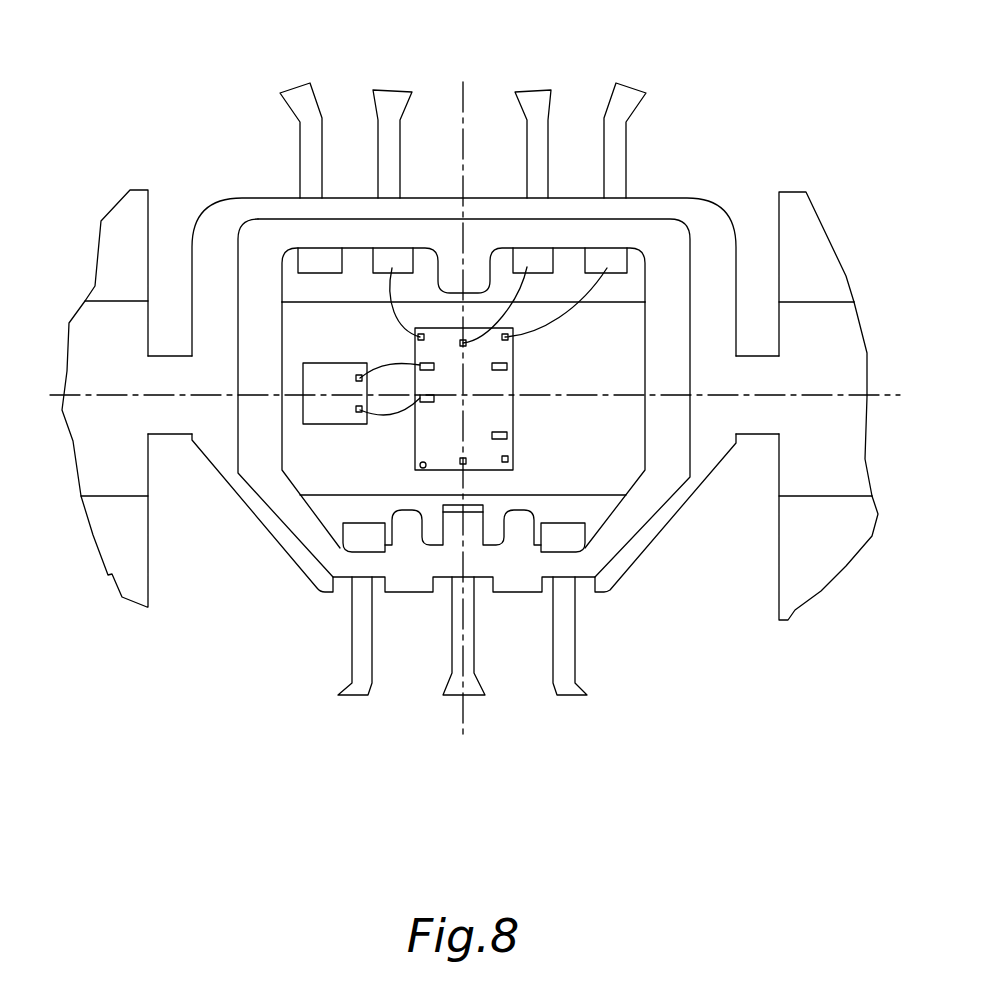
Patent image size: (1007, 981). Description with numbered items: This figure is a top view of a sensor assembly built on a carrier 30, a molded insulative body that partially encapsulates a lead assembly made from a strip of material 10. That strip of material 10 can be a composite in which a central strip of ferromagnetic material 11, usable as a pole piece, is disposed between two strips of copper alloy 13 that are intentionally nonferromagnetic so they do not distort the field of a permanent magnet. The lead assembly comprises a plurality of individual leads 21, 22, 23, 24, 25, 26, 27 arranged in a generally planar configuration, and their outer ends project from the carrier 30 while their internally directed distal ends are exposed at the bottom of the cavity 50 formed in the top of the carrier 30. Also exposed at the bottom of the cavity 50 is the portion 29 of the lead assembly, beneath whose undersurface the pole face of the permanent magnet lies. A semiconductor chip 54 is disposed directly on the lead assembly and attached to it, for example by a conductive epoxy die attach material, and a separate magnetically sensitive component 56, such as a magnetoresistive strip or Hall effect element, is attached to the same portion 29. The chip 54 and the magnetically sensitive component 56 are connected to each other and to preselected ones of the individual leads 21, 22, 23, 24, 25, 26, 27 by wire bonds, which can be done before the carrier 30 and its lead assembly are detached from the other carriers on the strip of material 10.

The strip of material 10 is at (130, 219).
The central strip of ferromagnetic material 11 is at (852, 362).
The strips of copper alloy 13 is at (817, 230).
The individual lead 21 is at (303, 143).
The individual lead 22 is at (388, 98).
The individual lead 23 is at (535, 98).
The individual lead 24 is at (630, 108).
The individual lead 25 is at (355, 663).
The individual lead 26 is at (447, 693).
The individual lead 27 is at (567, 660).
The portion of the lead assembly 29 is at (463, 427).
The carrier 30 is at (652, 545).
The cavity 50 is at (640, 262).
The semiconductor chip 54 is at (507, 415).
The magnetically sensitive component 56 is at (325, 368).